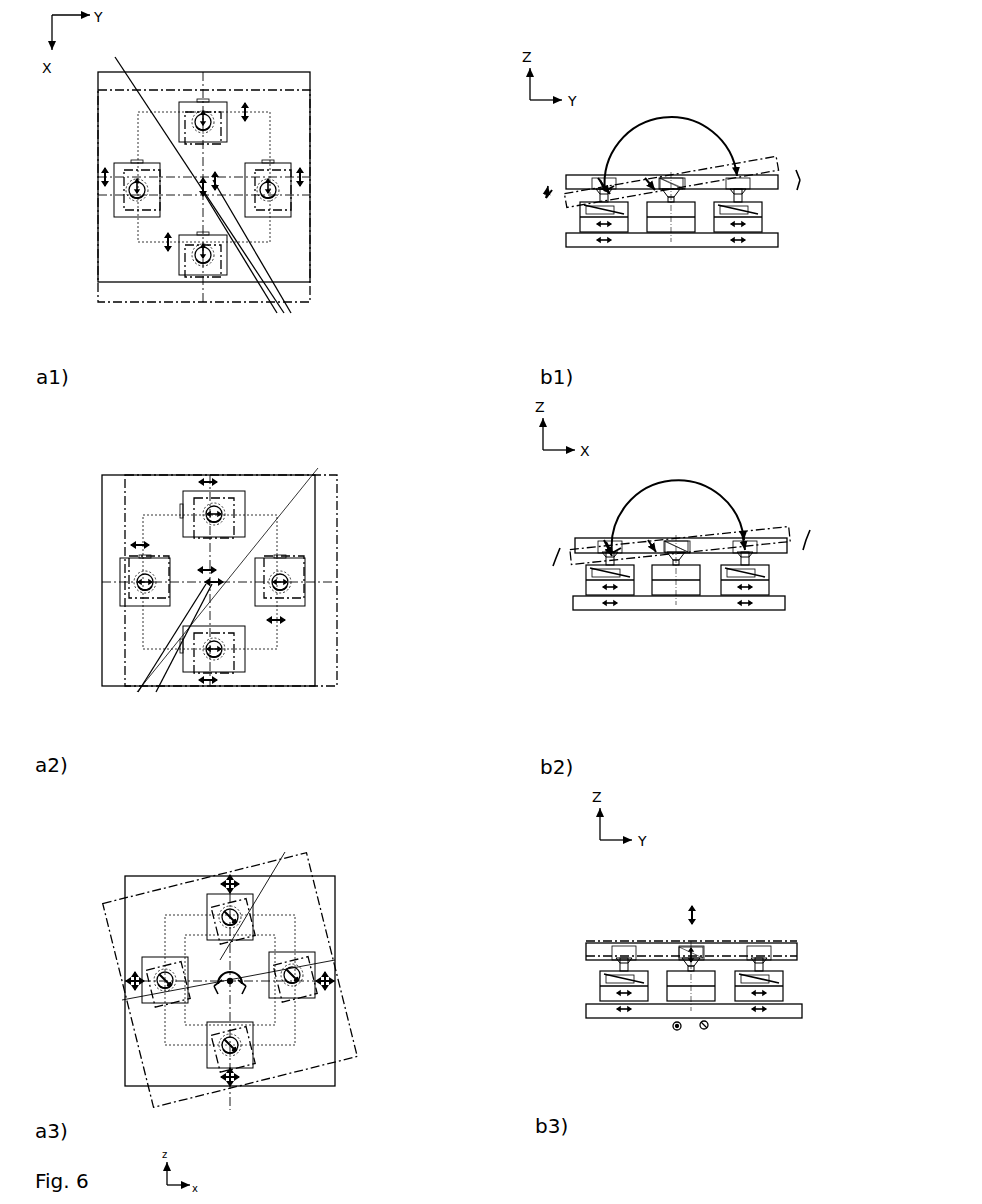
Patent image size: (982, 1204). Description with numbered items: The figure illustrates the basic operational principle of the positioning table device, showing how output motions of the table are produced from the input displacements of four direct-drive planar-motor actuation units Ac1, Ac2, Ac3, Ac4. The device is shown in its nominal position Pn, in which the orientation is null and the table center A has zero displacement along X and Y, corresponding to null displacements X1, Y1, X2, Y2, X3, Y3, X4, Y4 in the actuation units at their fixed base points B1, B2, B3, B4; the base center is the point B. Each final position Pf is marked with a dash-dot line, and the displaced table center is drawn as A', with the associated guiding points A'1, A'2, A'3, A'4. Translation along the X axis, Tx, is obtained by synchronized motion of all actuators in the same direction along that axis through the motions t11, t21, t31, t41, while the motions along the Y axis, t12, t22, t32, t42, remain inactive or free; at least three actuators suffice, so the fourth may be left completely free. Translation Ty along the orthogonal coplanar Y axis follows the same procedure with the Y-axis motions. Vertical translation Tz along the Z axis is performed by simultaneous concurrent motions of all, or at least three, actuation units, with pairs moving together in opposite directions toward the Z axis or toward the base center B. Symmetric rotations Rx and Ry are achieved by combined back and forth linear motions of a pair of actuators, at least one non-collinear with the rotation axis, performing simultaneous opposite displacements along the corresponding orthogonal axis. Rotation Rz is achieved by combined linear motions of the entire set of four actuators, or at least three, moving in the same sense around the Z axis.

The nominal position Pn is at (314, 68).
The final position Pf is at (97, 308).
The first actuation unit Ac1 is at (203, 334).
The second actuation unit Ac2 is at (341, 176).
The third actuation unit Ac3 is at (206, 48).
The fourth actuation unit Ac4 is at (58, 178).
The table center point A is at (429, 580).
The final table center point A' is at (437, 568).
The base center B is at (255, 257).
The first guiding point A'1 is at (407, 691).
The second guiding point A'2 is at (535, 542).
The third guiding point A'3 is at (459, 482).
The fourth guiding point A'4 is at (344, 619).
The first fixed base point B1 is at (206, 260).
The second fixed base point B2 is at (270, 180).
The third fixed base point B3 is at (203, 122).
The fourth fixed base point B4 is at (136, 180).
The X axis displacement X is at (716, 628).
The Y axis displacement Y is at (232, 573).
The Z axis displacement Z is at (681, 944).
The X displacement of first actuation unit X1 is at (200, 262).
The X displacement of second actuation unit X2 is at (270, 190).
The X displacement of third actuation unit X3 is at (206, 112).
The X displacement of fourth actuation unit X4 is at (137, 195).
The Y displacement of first actuation unit Y1 is at (215, 655).
The Y displacement of second actuation unit Y2 is at (735, 228).
The Y displacement of third actuation unit Y3 is at (215, 510).
The Y displacement of fourth actuation unit Y4 is at (600, 228).
The X-axis translation of first actuator t11 is at (165, 250).
The Y-axis translation of first actuator t12 is at (207, 690).
The X-axis translation of second actuator t21 is at (308, 178).
The Y-axis translation of second actuator t22 is at (737, 252).
The X-axis translation of third actuator t31 is at (248, 104).
The Y-axis translation of third actuator t32 is at (206, 474).
The X-axis translation of fourth actuator t41 is at (97, 177).
The Y-axis translation of fourth actuator t42 is at (598, 252).
The translational motion along X axis Tx is at (220, 178).
The translational motion along Y axis Ty is at (200, 565).
The vertical translational motion Tz is at (688, 907).
The rotation around X axis Rx is at (668, 149).
The rotation around Y axis Ry is at (675, 515).
The rotation around Z axis Rz is at (236, 972).